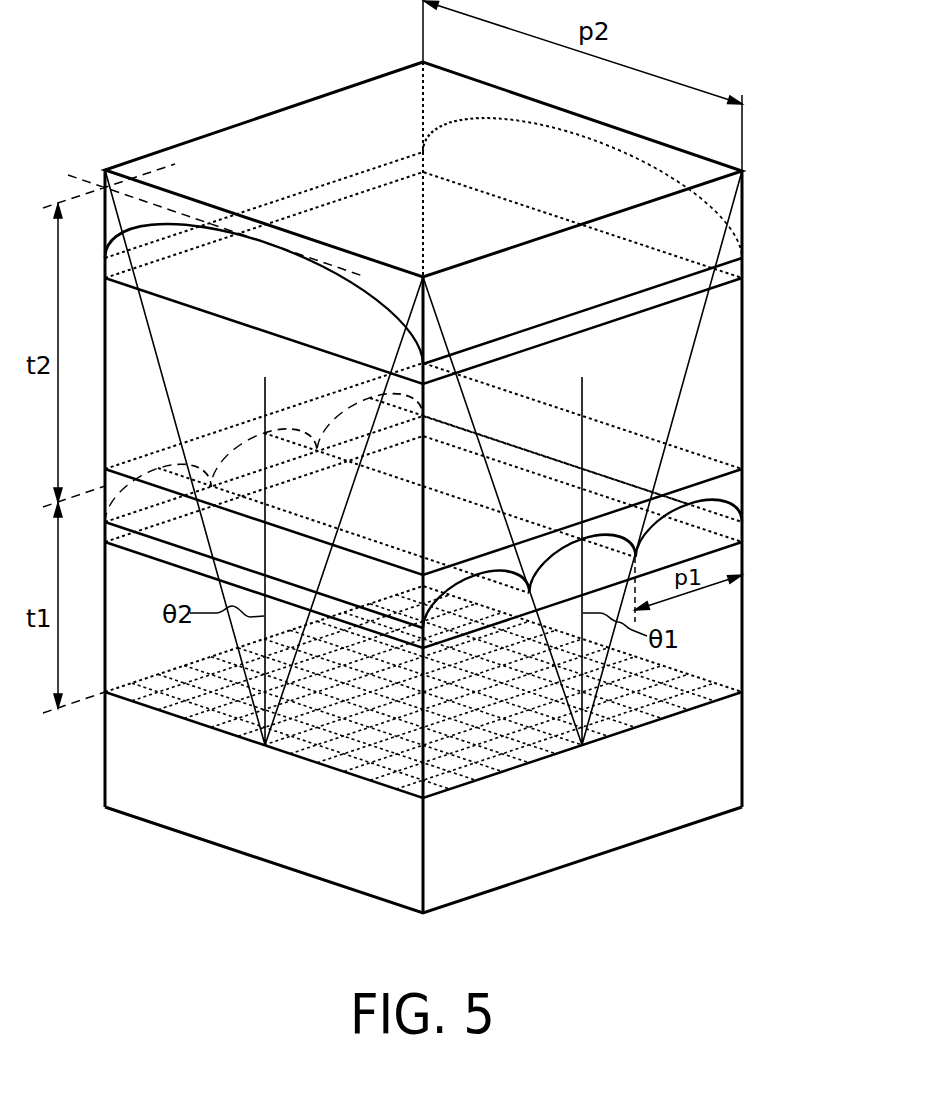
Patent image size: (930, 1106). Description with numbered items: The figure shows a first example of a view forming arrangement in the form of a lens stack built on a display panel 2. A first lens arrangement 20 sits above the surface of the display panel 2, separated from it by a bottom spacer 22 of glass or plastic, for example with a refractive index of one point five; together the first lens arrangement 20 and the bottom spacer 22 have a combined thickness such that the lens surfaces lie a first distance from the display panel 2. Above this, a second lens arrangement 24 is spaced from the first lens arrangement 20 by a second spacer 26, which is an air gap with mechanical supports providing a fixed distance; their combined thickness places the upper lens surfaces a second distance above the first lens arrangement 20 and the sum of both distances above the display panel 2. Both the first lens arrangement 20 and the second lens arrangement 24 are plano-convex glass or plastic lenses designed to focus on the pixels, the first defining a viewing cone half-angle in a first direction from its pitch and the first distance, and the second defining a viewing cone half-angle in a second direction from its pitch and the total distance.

The display panel 2 is at (758, 697).
The first lens arrangement 20 is at (758, 475).
The bottom spacer 22 is at (758, 549).
The second lens arrangement 24 is at (758, 173).
The second spacer 26 is at (758, 282).